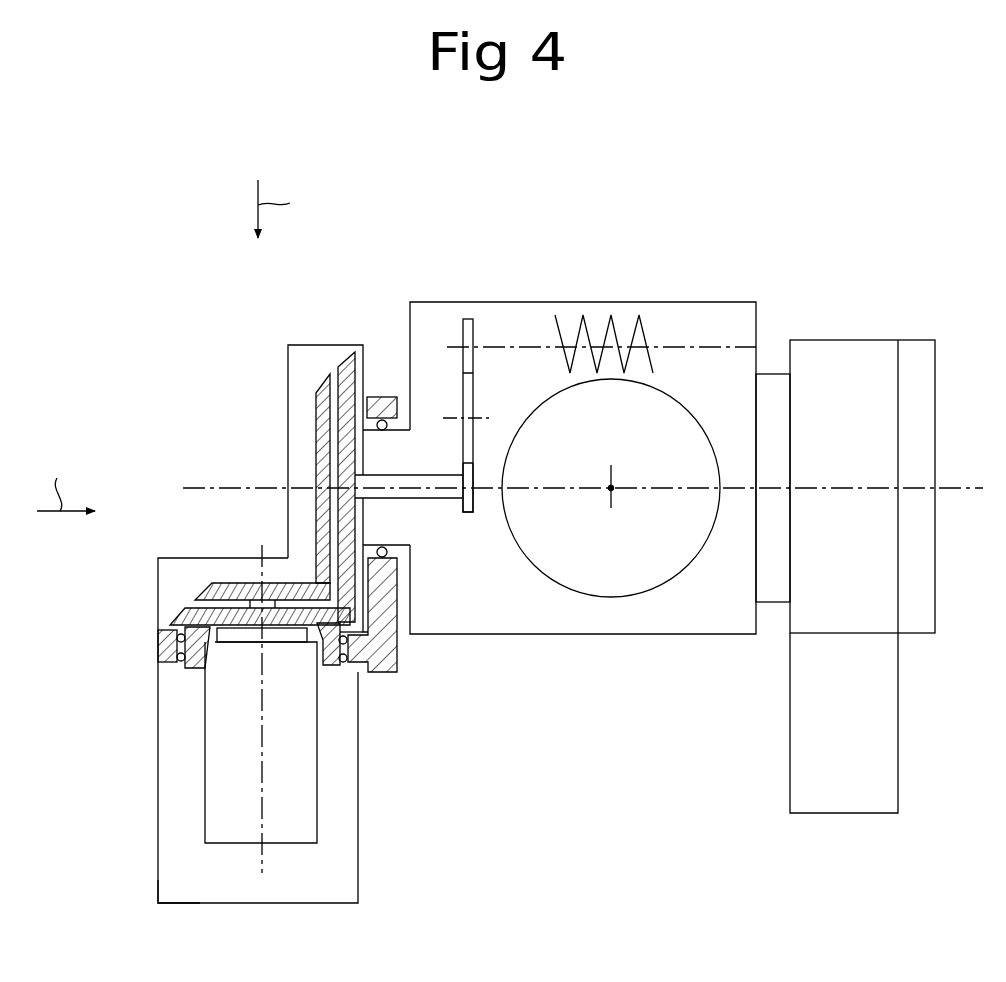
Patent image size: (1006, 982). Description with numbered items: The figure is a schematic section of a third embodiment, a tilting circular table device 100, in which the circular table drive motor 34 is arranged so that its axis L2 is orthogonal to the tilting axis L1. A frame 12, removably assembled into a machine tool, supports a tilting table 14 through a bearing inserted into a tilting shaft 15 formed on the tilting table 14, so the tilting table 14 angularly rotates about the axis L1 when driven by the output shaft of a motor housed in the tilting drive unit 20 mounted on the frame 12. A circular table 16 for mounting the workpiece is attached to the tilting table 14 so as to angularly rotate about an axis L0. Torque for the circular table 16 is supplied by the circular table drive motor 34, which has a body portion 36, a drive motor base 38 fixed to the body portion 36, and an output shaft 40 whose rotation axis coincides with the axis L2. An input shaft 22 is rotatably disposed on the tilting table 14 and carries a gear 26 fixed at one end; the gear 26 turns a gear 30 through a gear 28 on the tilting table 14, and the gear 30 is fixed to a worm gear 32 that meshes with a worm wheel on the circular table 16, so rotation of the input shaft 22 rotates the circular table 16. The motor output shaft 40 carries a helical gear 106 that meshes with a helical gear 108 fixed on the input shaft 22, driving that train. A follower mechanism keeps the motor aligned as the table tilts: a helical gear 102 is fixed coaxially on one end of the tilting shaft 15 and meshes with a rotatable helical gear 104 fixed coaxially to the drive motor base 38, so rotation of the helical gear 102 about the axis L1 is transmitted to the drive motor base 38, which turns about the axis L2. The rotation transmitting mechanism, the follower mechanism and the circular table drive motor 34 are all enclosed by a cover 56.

The tilting circular table device 100 is at (678, 210).
The frame 12 is at (382, 397).
The tilting table 14 is at (548, 301).
The tilting shaft 15 is at (392, 457).
The circular table 16 is at (676, 397).
The tilting drive unit 20 is at (850, 362).
The input shaft 22 is at (432, 500).
The gear 26 is at (468, 512).
The gear 28 is at (473, 383).
The gear 30 is at (468, 318).
The worm gear 32 is at (617, 327).
The circular table drive motor 34 is at (203, 755).
The body portion 36 is at (218, 805).
The drive motor base 38 is at (325, 665).
The output shaft 40 is at (257, 642).
The cover 56 is at (160, 862).
The helical gear 102 is at (343, 365).
The helical gear 104 is at (175, 615).
The helical gear 106 is at (212, 582).
The helical gear 108 is at (316, 392).
The axis L0 is at (612, 493).
The axis L1 is at (972, 488).
The axis L2 is at (262, 818).